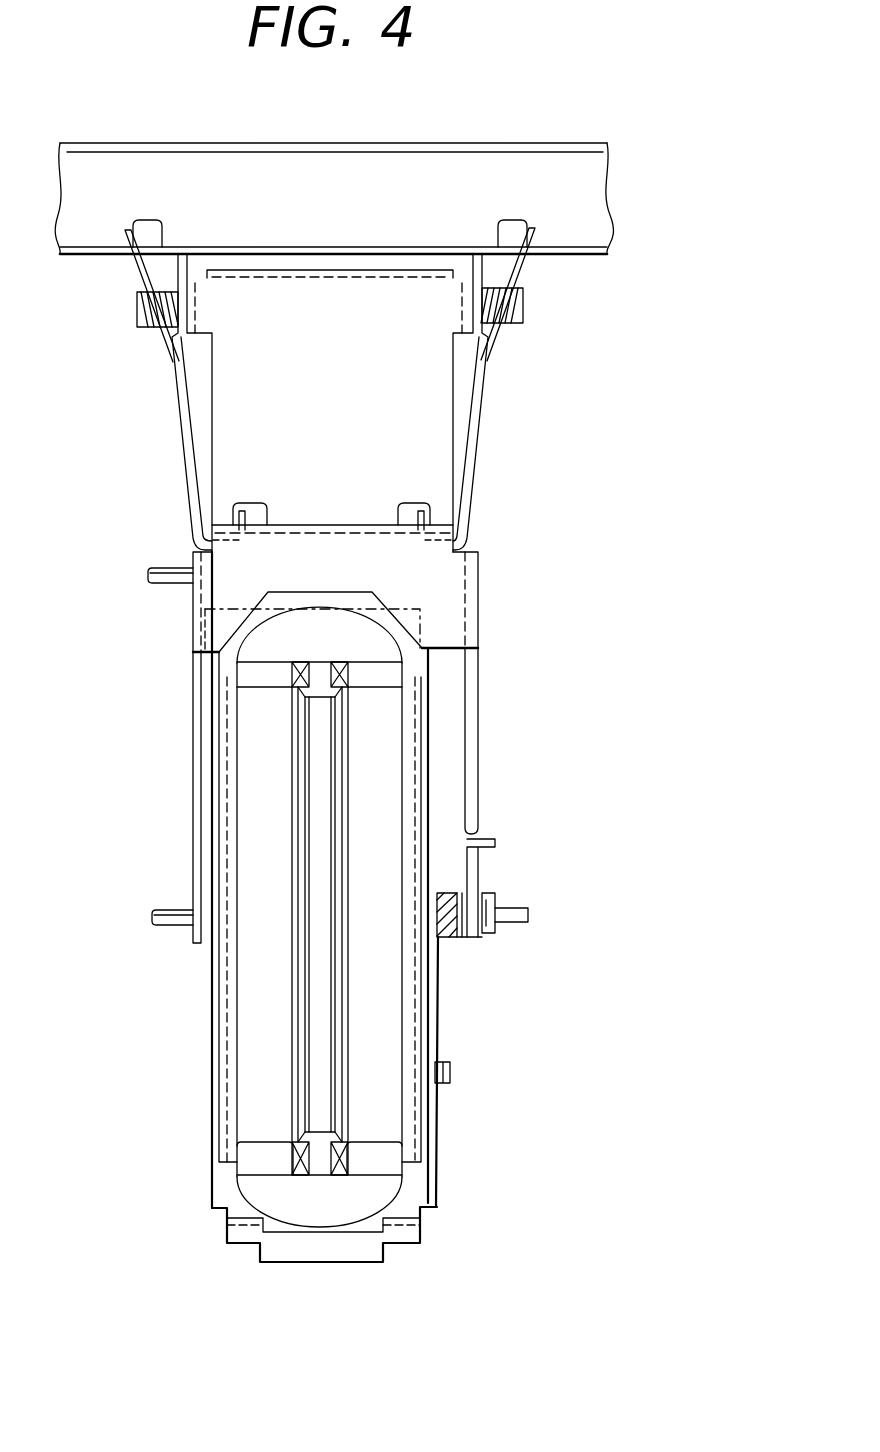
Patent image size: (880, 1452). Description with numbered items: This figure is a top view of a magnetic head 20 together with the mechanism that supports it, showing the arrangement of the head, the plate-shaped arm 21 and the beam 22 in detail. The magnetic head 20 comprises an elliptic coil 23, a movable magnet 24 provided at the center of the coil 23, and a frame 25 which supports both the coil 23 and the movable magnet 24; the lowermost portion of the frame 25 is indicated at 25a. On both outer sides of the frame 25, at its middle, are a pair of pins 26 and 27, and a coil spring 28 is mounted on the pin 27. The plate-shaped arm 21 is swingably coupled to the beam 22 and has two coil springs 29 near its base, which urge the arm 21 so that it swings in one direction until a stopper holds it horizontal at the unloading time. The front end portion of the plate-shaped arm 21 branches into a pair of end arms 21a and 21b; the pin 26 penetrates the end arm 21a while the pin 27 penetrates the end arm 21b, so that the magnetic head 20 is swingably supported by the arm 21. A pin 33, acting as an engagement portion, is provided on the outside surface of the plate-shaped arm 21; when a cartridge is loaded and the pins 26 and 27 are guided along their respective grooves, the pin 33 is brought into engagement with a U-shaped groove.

The magnetic head 20 is at (516, 709).
The plate-shaped arm 21 is at (430, 420).
The end arm 21a is at (197, 786).
The end arm 21b is at (480, 772).
The beam 22 is at (450, 172).
The elliptic coil 23 is at (250, 1002).
The movable magnet 24 is at (300, 1058).
The frame 25 is at (417, 1177).
The bottom wall of cap 25a is at (353, 1253).
The pin 26 is at (162, 913).
The pin 27 is at (508, 908).
The coil spring 28 is at (450, 937).
The coil spring 29 is at (137, 306).
The pin 33 is at (168, 573).